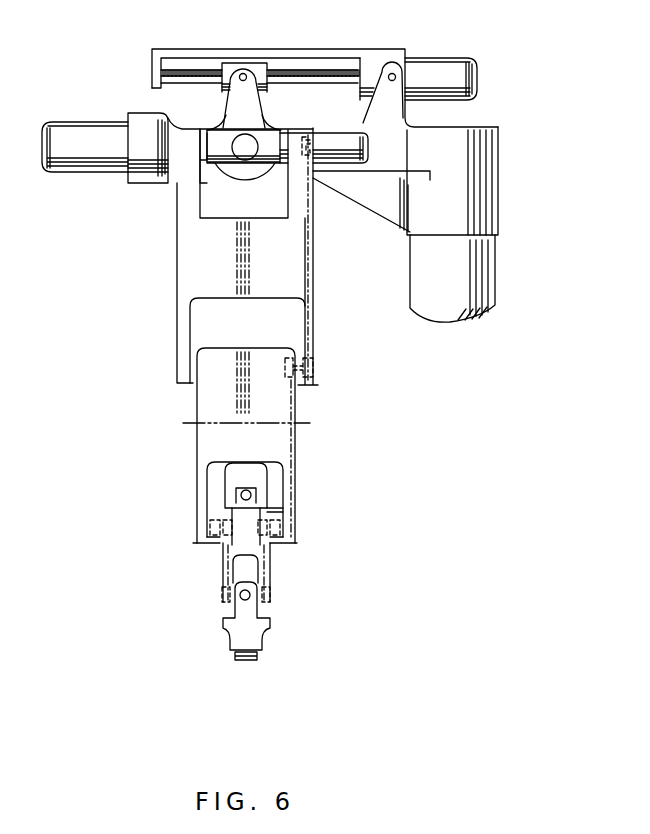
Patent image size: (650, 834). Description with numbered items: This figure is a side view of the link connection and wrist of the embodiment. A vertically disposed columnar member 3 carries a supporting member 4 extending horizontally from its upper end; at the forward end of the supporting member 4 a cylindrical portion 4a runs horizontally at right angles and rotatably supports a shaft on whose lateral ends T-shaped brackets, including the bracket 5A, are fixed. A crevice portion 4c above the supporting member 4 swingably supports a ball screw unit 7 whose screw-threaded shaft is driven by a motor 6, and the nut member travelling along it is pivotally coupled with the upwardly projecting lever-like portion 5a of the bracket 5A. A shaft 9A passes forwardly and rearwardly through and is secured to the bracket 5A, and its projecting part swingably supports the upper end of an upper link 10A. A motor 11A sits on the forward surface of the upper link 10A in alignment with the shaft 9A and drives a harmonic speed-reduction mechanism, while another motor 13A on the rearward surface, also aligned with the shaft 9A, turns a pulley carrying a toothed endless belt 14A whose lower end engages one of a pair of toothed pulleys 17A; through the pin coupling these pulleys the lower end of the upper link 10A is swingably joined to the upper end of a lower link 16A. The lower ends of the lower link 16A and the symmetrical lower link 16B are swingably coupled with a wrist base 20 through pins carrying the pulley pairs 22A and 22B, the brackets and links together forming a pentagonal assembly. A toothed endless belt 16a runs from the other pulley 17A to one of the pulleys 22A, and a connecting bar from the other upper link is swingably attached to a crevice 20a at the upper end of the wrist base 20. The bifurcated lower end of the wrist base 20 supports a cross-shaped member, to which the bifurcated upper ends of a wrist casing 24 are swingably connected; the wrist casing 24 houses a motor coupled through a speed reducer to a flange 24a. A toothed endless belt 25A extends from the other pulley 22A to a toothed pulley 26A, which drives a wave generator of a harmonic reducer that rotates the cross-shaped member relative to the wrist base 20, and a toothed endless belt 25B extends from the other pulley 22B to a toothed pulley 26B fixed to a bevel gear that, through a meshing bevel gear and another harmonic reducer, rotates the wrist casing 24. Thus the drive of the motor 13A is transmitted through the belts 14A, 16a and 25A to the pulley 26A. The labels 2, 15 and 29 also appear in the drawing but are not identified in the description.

The tool assembly 2 is at (174, 676).
The columnar member 3 is at (497, 282).
The supporting member 4 is at (497, 124).
The cylindrical portion 4a is at (244, 178).
The crevice portion 4c is at (391, 68).
The lever-like portion 5a is at (243, 72).
The T-shaped bracket 5A is at (222, 133).
The motor 6 is at (440, 58).
The ball screw unit 7 is at (306, 64).
The shaft 9A is at (205, 180).
The upper link 10A is at (177, 263).
The motor 11A is at (78, 122).
The motor 13A is at (342, 165).
The toothed endless belt 14A is at (311, 271).
The pin 15 is at (311, 135).
The lower link 16A is at (195, 393).
The toothed endless belt 16a is at (292, 443).
The lower link 16B is at (209, 478).
The toothed pulleys 17A is at (320, 382).
The wrist base 20 is at (235, 504).
The crevice 20a is at (257, 493).
The pulley pair 22A is at (262, 535).
The pulley pair 22B is at (227, 535).
The wrist casing 24 is at (262, 638).
The flange 24a is at (246, 662).
The toothed endless belt 25A is at (266, 572).
The toothed endless belt 25B is at (225, 572).
The toothed pulley 26A is at (267, 602).
The toothed pulley 26B is at (224, 602).
The plate 29 is at (277, 507).